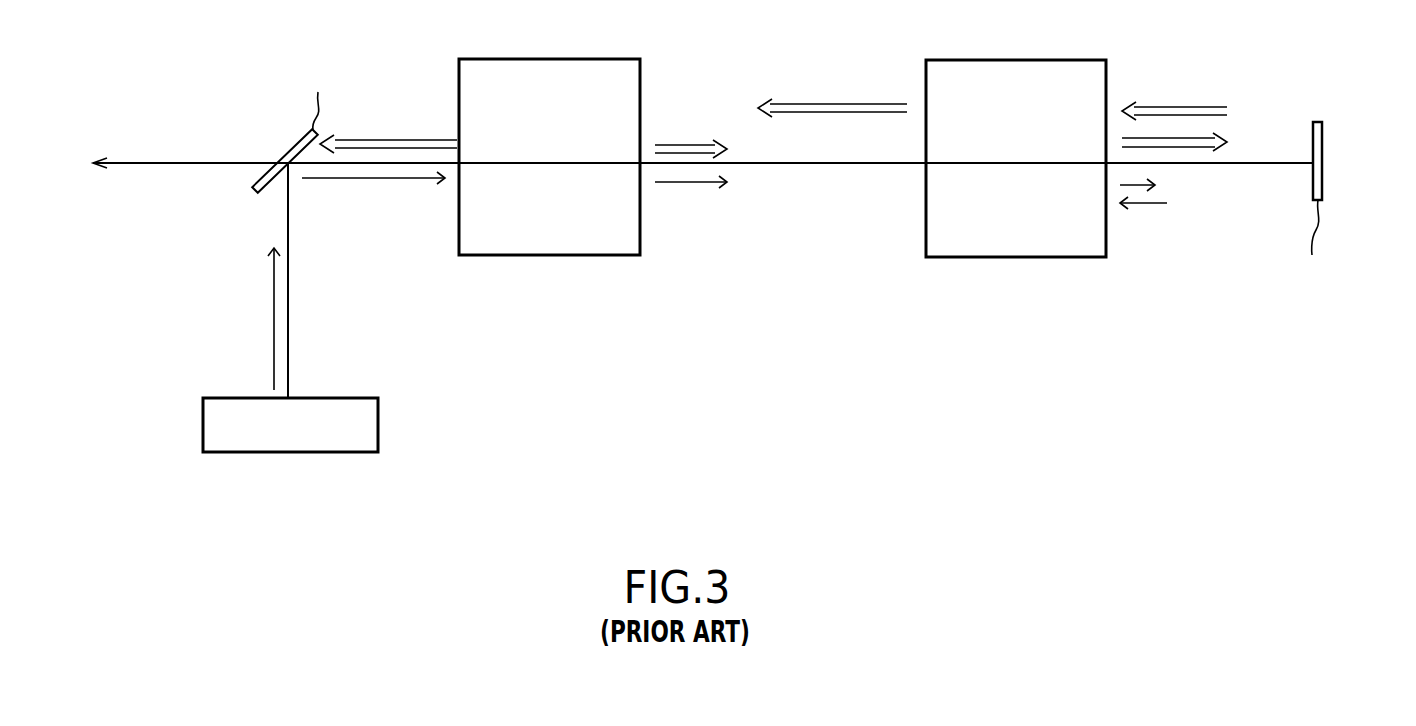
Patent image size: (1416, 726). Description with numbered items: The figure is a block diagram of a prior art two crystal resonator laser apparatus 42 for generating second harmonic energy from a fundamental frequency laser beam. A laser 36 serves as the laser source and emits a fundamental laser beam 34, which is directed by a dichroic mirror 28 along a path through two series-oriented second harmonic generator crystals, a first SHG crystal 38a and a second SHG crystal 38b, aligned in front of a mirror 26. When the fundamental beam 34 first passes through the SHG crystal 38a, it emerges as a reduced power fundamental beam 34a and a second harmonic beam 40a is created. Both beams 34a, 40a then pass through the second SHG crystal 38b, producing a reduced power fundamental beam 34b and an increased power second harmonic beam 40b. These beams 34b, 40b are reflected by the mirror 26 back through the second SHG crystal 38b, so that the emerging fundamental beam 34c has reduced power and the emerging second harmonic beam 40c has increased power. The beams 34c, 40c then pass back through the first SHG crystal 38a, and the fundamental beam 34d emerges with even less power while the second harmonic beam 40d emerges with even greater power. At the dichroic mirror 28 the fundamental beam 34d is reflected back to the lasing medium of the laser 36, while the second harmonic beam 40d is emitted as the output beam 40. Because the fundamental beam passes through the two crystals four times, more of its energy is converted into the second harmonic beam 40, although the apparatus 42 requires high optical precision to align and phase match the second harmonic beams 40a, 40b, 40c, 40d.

The mirror 26 is at (1322, 145).
The dichroic mirror 28 is at (283, 145).
The fundamental laser beam 34 is at (274, 338).
The reduced power fundamental beam 34a is at (677, 182).
The reduced power fundamental beam 34b is at (1137, 202).
The emerging fundamental beam 34c is at (707, 197).
The fundamental beam 34d is at (308, 230).
The laser 36 is at (297, 452).
The SHG crystal 38a is at (567, 255).
The second SHG crystal 38b is at (988, 257).
The beam 40 is at (140, 165).
The second harmonic beam 40a is at (688, 143).
The increased power second harmonic beam 40b is at (1200, 137).
The emerging second harmonic beam 40c is at (853, 104).
The second harmonic beam 40d is at (397, 137).
The two crystal resonator laser apparatus 42 is at (657, 410).